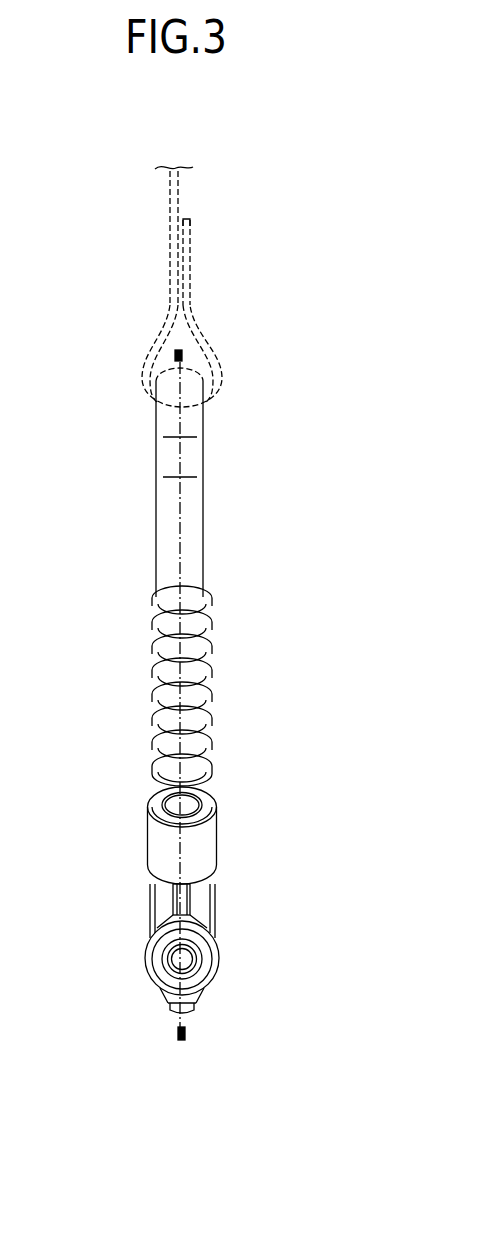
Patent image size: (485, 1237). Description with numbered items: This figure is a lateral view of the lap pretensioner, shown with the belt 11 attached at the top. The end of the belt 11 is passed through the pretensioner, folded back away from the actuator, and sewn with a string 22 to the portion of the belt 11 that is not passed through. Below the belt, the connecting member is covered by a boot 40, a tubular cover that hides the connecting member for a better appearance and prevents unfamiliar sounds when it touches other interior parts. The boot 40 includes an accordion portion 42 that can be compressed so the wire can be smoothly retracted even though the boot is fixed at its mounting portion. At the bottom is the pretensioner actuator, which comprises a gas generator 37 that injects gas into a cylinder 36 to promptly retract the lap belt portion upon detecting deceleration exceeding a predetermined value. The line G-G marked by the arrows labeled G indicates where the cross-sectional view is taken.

The belt 11 is at (179, 192).
The string 22 is at (189, 260).
The boot 40 is at (203, 527).
The accordion portion 42 is at (208, 692).
The gas generator 37 is at (203, 848).
The cylinder 36 is at (207, 958).
The line G- G is at (197, 355).